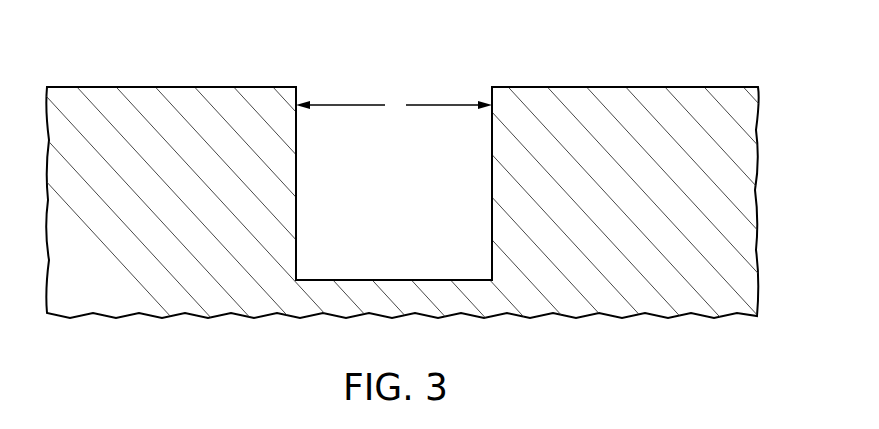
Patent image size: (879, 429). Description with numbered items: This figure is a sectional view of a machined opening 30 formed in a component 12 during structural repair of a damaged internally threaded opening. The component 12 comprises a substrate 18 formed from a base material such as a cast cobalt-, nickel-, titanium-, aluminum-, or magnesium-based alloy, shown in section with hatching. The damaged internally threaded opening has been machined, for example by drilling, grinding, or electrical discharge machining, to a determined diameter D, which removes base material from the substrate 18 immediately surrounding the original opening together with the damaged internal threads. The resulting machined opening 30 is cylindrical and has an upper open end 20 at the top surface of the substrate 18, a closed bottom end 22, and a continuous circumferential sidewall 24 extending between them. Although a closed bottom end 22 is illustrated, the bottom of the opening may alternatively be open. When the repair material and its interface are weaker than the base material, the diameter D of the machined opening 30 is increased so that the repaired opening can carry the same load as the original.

The component 12 is at (439, 160).
The substrate 18 is at (730, 141).
The upper open end 20 is at (307, 92).
The closed bottom end 22 is at (412, 280).
The continuous circumferential sidewall 24 is at (296, 202).
The machined opening 30 is at (410, 186).